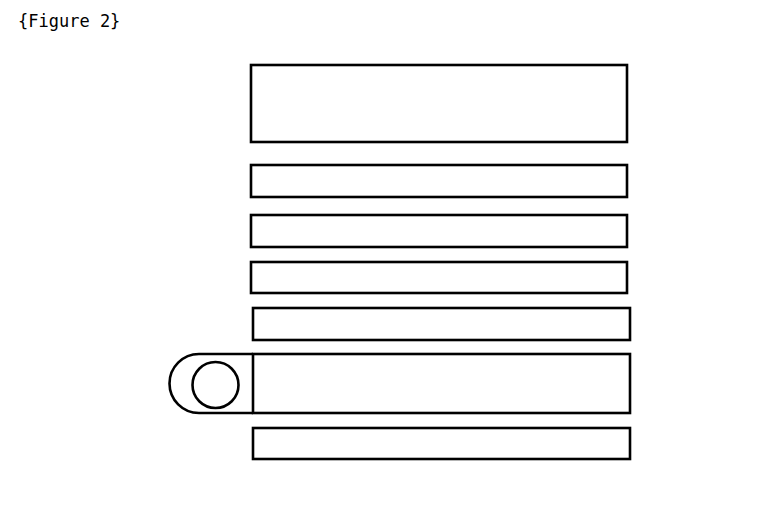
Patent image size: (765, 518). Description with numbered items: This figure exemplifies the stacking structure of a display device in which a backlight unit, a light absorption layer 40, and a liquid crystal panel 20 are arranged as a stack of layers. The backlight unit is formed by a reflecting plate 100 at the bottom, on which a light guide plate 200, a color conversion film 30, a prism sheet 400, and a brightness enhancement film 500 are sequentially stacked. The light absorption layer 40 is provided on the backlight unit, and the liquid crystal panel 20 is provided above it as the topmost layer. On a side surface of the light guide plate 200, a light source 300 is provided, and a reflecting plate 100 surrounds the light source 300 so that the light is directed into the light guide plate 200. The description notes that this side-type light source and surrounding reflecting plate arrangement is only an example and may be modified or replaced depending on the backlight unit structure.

The liquid crystal panel 20 is at (595, 93).
The light absorption layer 40 is at (612, 173).
The brightness enhancement film 500 is at (612, 223).
The prism sheet 400 is at (612, 270).
The color conversion film 30 is at (614, 316).
The light guide plate 200 is at (607, 378).
The reflecting plate 100 is at (185, 355).
The light source 300 is at (212, 375).